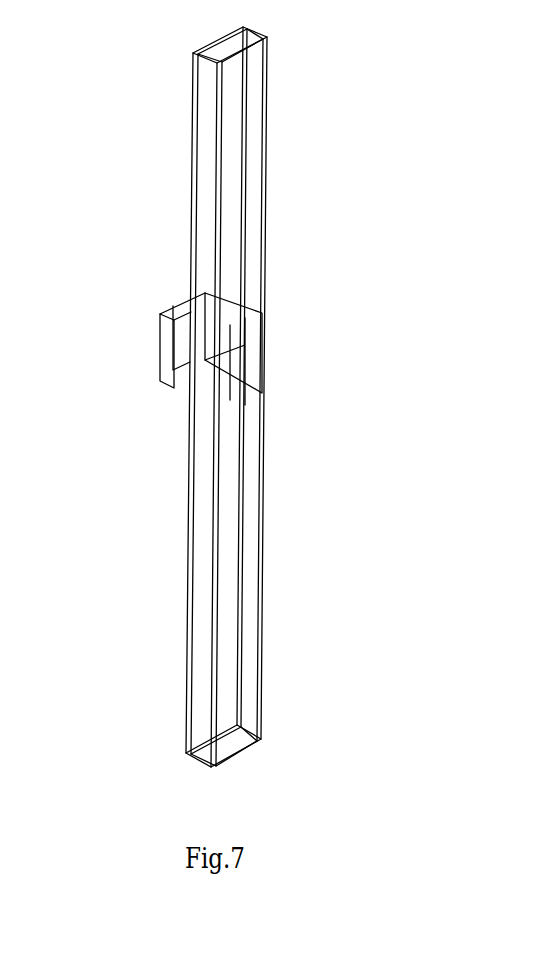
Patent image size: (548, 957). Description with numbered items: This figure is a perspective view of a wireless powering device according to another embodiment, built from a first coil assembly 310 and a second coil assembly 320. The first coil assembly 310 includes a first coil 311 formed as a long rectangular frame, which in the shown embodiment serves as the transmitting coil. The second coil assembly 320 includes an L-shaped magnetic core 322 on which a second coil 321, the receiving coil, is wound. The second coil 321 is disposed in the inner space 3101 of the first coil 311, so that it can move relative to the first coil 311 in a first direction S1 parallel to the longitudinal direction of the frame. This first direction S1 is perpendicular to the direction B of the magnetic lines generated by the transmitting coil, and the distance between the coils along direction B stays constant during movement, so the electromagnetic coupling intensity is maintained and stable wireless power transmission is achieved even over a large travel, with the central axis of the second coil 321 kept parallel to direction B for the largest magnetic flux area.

The first coil assembly 310 is at (217, 397).
The inner space 3101 is at (232, 182).
The first coil 311 is at (258, 508).
The second coil assembly 320 is at (212, 319).
The second coil 321 is at (262, 300).
The magnetic core 322 is at (165, 355).
The first direction S1 is at (165, 447).
The direction of magnetic lines B is at (236, 634).